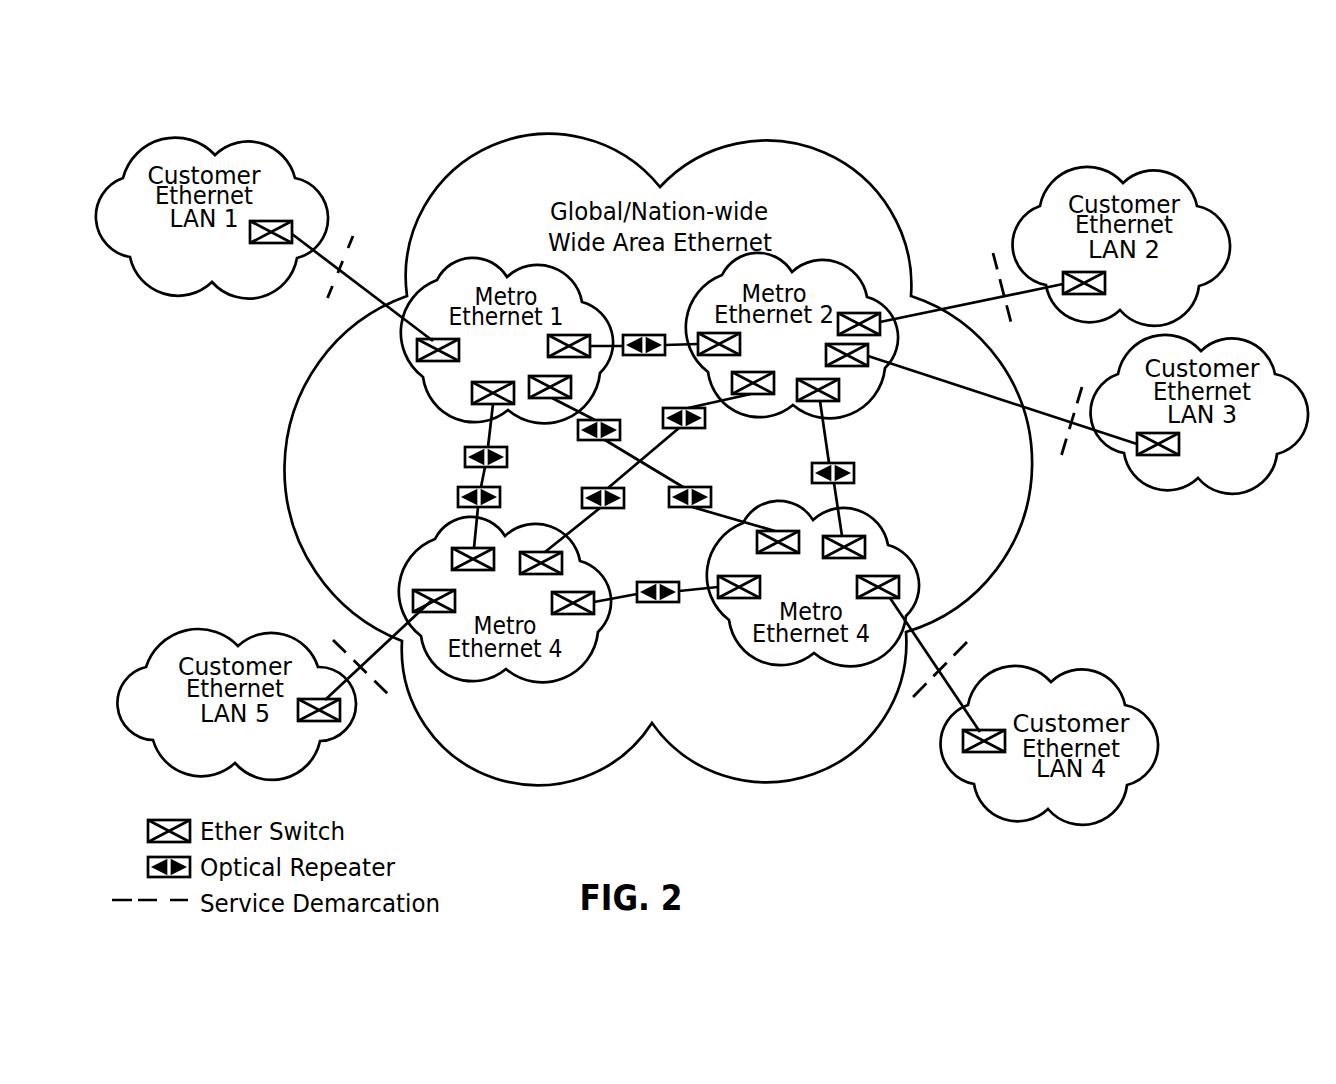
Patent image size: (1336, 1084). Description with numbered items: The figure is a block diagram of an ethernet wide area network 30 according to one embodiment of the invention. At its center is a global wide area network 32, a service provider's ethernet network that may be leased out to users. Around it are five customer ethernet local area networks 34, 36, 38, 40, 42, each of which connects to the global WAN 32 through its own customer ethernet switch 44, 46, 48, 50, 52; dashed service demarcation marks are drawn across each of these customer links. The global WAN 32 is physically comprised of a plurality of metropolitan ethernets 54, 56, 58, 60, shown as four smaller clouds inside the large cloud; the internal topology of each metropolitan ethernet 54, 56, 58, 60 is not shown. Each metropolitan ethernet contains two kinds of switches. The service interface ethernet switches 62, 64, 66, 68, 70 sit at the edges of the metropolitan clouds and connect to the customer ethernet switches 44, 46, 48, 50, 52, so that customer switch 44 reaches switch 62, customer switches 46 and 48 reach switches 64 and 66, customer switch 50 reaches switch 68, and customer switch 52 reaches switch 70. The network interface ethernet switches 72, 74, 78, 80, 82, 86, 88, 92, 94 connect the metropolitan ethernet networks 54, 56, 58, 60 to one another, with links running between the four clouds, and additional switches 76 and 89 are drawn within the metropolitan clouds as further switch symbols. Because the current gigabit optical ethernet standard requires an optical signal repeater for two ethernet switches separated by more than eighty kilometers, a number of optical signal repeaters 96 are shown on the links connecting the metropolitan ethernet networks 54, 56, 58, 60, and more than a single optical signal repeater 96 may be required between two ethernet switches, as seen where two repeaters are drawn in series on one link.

The ethernet wide area network 30 is at (676, 81).
The global wide area network 32 is at (800, 138).
The ethernet local area network 34 is at (258, 142).
The ethernet local area network 36 is at (1085, 163).
The ethernet local area network 38 is at (1236, 335).
The ethernet local area network 40 is at (1080, 668).
The ethernet local area network 42 is at (198, 632).
The ethernet switch 44 is at (297, 192).
The ethernet switch 46 is at (1048, 213).
The ethernet switch 48 is at (1148, 456).
The ethernet switch 50 is at (972, 757).
The ethernet switch 52 is at (327, 722).
The metropolitan ethernet 54 is at (468, 267).
The metropolitan ethernet 56 is at (818, 264).
The metropolitan ethernet 58 is at (776, 664).
The metropolitan ethernet 60 is at (538, 679).
The service interface ethernet switch 62 is at (428, 376).
The service interface ethernet switch 64 is at (858, 313).
The service interface ethernet switch 66 is at (866, 370).
The service interface ethernet switch 68 is at (892, 574).
The service interface ethernet switch 70 is at (420, 590).
The network interface ethernet switch 72 is at (455, 410).
The network interface ethernet switch 74 is at (572, 390).
The Ether switch 76 is at (574, 335).
The network interface ethernet switch 78 is at (712, 332).
The network interface ethernet switch 80 is at (752, 395).
The network interface ethernet switch 82 is at (846, 403).
The network interface ethernet switch 86 is at (780, 527).
The network interface ethernet switch 88 is at (726, 602).
The Ether switch 89 is at (878, 536).
The network interface ethernet switch 92 is at (566, 562).
The network interface ethernet switch 94 is at (440, 552).
The optical signal repeater 96 is at (633, 334).